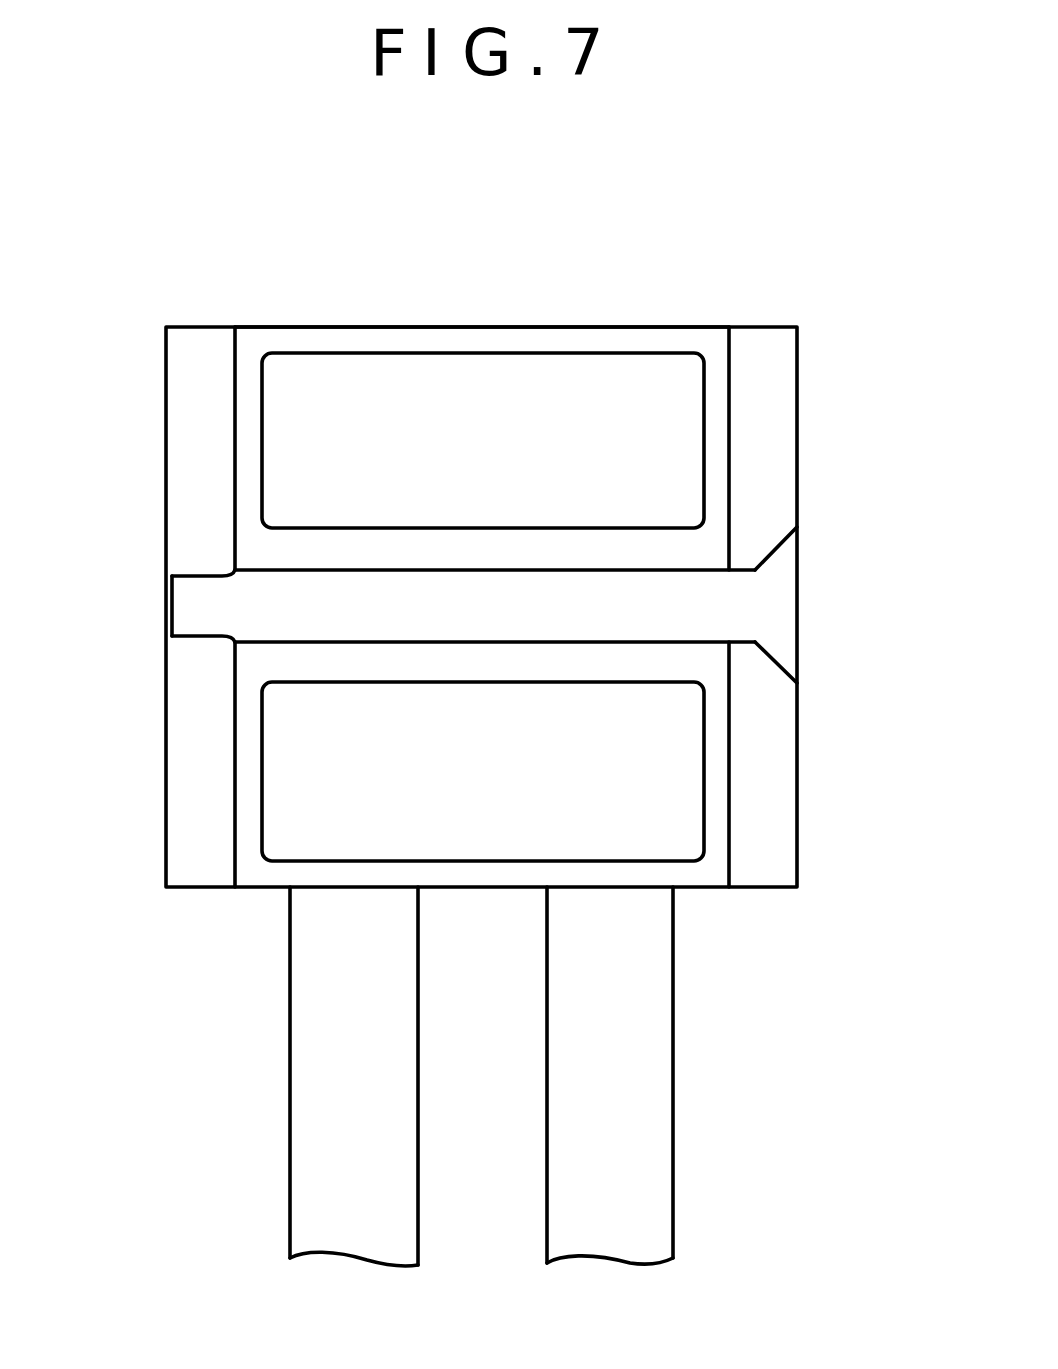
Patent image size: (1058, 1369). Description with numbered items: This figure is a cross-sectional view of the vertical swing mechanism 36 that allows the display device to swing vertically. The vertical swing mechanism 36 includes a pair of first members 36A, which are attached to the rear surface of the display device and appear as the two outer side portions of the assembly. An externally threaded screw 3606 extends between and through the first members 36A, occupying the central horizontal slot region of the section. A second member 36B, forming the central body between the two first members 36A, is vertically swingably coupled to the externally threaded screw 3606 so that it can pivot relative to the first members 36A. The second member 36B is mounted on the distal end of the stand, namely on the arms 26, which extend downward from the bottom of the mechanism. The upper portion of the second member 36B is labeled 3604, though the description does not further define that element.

The vertical swing mechanism 36 is at (492, 533).
The first members 36A is at (166, 411).
The second member 36B is at (488, 540).
The upper plate 3604 is at (465, 327).
The externally threaded screw 3606 is at (598, 607).
The arms 26 is at (290, 990).